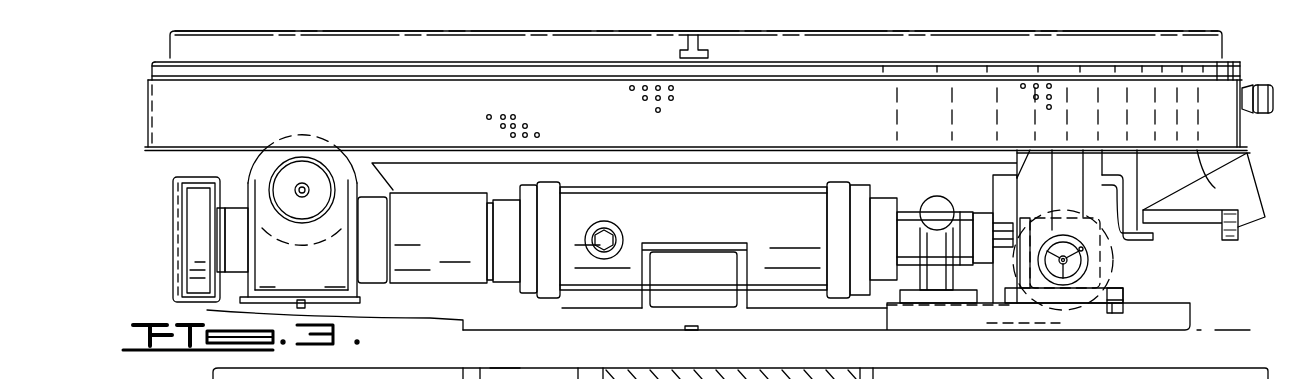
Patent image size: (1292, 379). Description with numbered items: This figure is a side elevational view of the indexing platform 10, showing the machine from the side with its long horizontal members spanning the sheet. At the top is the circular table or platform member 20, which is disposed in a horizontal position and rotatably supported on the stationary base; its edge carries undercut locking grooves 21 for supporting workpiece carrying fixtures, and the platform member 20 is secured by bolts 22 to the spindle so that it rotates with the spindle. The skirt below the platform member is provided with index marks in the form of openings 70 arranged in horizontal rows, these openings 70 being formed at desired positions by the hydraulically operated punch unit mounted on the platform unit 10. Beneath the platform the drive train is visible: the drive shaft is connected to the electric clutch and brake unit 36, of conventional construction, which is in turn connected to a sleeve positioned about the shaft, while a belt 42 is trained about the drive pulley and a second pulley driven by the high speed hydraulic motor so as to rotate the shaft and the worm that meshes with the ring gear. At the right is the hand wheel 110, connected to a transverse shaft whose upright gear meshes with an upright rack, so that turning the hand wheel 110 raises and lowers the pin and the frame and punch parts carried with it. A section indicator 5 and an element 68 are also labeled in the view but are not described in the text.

The indexing platform 10 is at (1245, 46).
The circular table or platform member 20 is at (909, 46).
The undercut locking grooves 21 is at (699, 36).
The bolts 22 is at (500, 378).
The electric clutch and brake unit 36 is at (440, 211).
The belt 42 is at (198, 197).
The section line 5- 5 is at (147, 208).
The lower member 68 is at (712, 370).
The openings 70 is at (644, 98).
The hand wheel 110 is at (1090, 268).